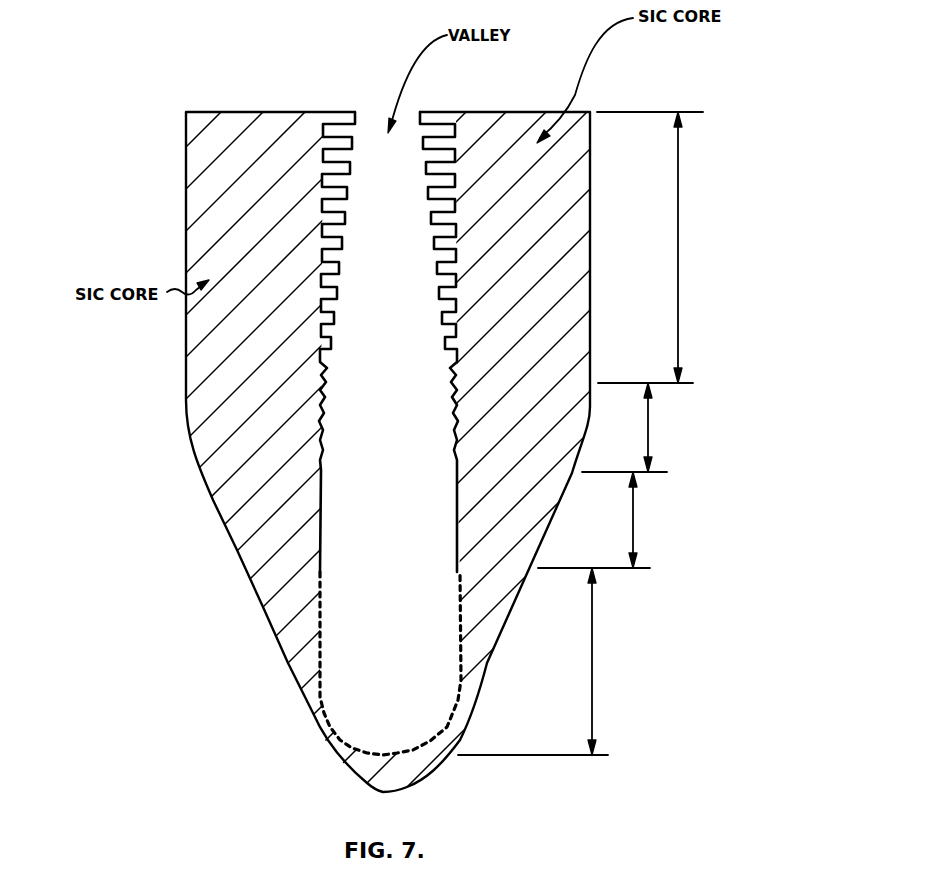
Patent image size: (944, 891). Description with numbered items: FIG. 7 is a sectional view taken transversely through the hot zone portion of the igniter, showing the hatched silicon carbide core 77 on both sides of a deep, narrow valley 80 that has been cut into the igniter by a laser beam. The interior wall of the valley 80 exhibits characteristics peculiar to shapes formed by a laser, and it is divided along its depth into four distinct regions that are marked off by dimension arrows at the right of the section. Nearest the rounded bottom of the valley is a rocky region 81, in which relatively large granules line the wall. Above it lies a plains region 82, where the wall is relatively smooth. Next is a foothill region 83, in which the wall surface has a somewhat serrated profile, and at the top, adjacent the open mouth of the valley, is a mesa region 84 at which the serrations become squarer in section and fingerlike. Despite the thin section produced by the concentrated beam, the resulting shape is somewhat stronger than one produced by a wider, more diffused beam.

The core 77 is at (203, 112).
The valley 80 is at (365, 147).
The rocky region 81 is at (592, 650).
The plains region 82 is at (633, 507).
The foothill region 83 is at (648, 423).
The mesa region 84 is at (678, 241).